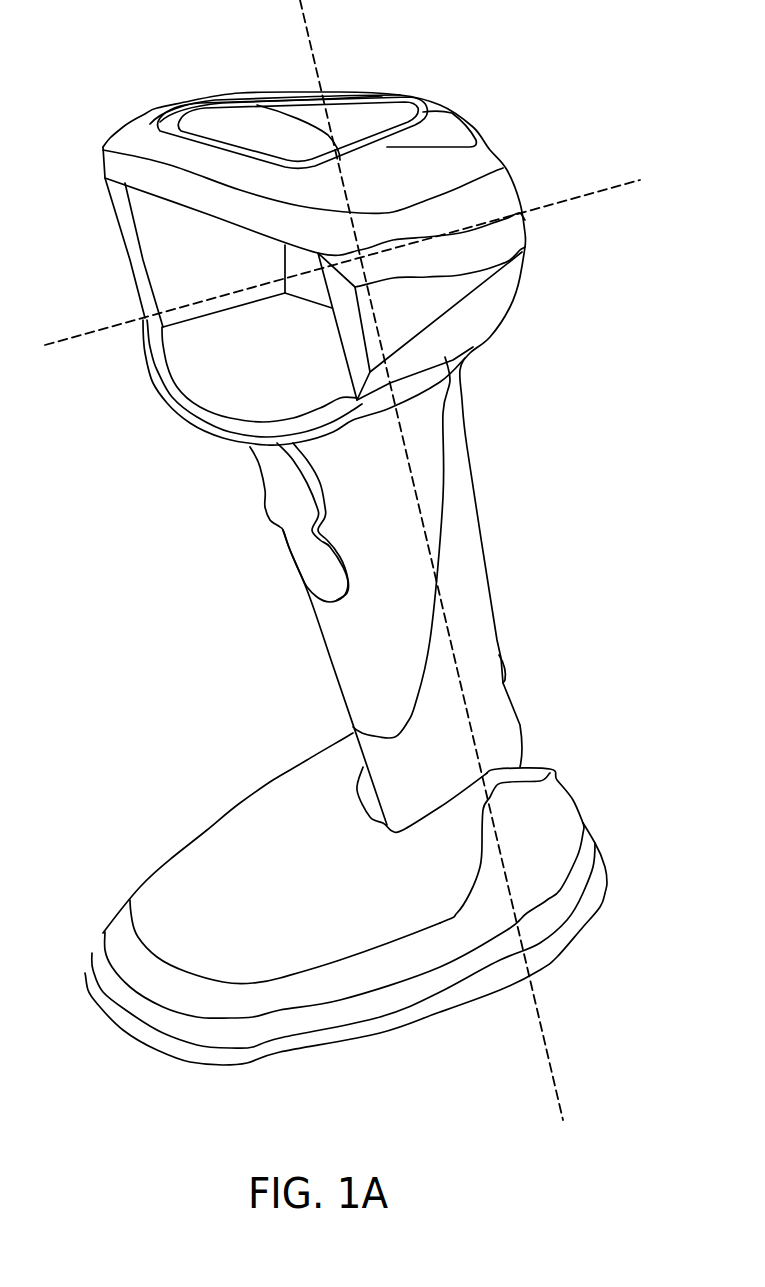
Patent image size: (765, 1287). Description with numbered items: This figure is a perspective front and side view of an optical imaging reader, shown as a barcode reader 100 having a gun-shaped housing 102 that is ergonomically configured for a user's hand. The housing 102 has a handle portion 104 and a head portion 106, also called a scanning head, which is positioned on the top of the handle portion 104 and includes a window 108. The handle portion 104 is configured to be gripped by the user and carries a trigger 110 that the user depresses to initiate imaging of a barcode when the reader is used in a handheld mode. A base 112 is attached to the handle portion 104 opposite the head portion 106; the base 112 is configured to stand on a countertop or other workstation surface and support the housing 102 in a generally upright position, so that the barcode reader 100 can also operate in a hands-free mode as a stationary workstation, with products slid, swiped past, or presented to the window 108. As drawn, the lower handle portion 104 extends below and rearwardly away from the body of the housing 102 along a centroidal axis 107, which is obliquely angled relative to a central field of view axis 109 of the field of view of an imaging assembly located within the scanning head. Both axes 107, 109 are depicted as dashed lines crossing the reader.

The barcode reader 100 is at (578, 52).
The housing 102 is at (450, 472).
The handle portion 104 is at (483, 652).
The head portion 106 is at (370, 113).
The centroidal axis 107 is at (473, 728).
The window 108 is at (312, 293).
The central field of view axis 109 is at (75, 338).
The trigger 110 is at (283, 518).
The base 112 is at (163, 887).